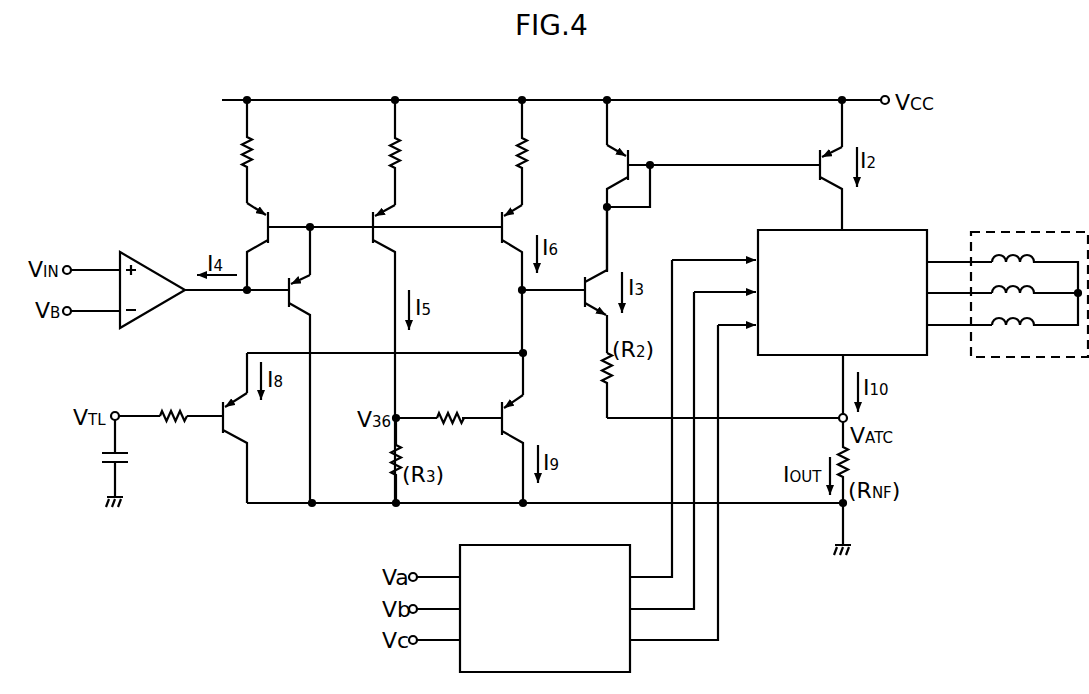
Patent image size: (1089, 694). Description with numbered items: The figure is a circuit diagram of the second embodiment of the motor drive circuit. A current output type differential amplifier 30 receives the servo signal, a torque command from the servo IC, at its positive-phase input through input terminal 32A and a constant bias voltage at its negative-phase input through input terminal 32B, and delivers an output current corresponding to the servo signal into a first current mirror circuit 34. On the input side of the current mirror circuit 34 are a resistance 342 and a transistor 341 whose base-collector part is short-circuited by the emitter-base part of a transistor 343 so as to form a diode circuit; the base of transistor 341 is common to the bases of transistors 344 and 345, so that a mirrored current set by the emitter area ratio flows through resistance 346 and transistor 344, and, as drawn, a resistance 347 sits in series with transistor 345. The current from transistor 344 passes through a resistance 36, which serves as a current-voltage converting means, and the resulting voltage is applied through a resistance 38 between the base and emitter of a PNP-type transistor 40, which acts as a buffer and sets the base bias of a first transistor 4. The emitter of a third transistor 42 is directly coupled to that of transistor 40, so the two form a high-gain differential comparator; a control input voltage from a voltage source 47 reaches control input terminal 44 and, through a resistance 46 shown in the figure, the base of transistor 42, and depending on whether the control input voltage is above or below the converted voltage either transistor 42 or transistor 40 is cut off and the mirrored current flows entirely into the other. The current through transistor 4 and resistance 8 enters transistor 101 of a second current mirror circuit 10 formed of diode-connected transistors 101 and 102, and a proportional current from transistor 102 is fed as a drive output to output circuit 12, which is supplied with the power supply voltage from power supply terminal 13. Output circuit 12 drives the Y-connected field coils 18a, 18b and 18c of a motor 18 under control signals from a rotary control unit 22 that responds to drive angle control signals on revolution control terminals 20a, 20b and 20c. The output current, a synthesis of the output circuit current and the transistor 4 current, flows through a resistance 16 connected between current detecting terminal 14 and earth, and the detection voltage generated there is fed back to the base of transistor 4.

The resistance 342 is at (244, 152).
The resistance 346 is at (392, 152).
The resistor 347 is at (518, 152).
The transistor 341 is at (262, 236).
The transistor 343 is at (287, 300).
The transistor 344 is at (372, 244).
The transistor 345 is at (500, 244).
The first current mirror circuit 34 is at (344, 221).
The transistor 4 is at (581, 305).
The resistance 8 is at (614, 372).
The transistor 101 is at (615, 172).
The transistor 102 is at (822, 180).
The second current mirror circuit 10 is at (738, 158).
The power supply terminal 13 is at (884, 96).
The current output type differential amplifier 30 is at (161, 272).
The input terminal 32A is at (68, 265).
The input terminal 32B is at (68, 316).
The output circuit 12 is at (787, 358).
The current detecting terminal 14 is at (839, 422).
The resistance 16 is at (849, 462).
The motor 18 is at (1016, 360).
The field coil 18a is at (1033, 260).
The field coil 18b is at (1033, 291).
The field coil 18c is at (1033, 323).
The control input terminal 44 is at (116, 412).
The resistor 46 is at (173, 422).
The voltage source 47 is at (100, 463).
The transistor 42 is at (240, 432).
The resistance 38 is at (449, 412).
The resistance 36 is at (392, 455).
The PNP-type transistor 40 is at (516, 430).
The rotary control unit 22 is at (633, 658).
The revolution control terminal 20a is at (414, 573).
The revolution control terminal 20b is at (425, 601).
The revolution control terminal 20c is at (414, 644).